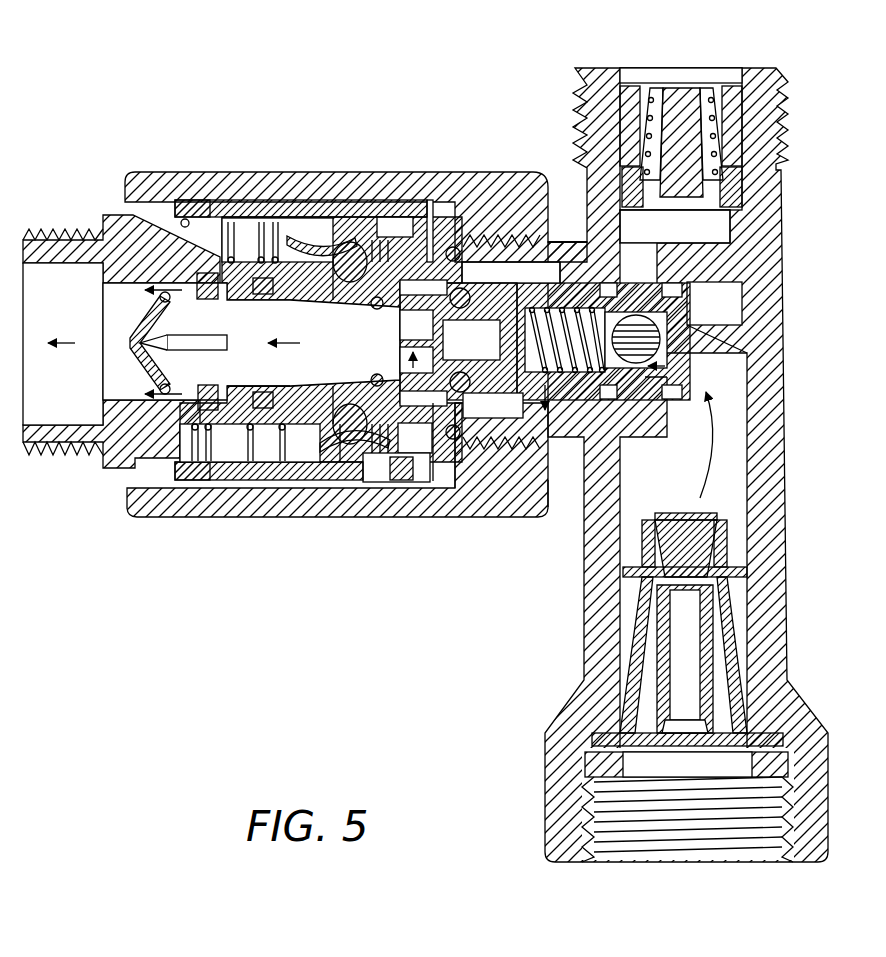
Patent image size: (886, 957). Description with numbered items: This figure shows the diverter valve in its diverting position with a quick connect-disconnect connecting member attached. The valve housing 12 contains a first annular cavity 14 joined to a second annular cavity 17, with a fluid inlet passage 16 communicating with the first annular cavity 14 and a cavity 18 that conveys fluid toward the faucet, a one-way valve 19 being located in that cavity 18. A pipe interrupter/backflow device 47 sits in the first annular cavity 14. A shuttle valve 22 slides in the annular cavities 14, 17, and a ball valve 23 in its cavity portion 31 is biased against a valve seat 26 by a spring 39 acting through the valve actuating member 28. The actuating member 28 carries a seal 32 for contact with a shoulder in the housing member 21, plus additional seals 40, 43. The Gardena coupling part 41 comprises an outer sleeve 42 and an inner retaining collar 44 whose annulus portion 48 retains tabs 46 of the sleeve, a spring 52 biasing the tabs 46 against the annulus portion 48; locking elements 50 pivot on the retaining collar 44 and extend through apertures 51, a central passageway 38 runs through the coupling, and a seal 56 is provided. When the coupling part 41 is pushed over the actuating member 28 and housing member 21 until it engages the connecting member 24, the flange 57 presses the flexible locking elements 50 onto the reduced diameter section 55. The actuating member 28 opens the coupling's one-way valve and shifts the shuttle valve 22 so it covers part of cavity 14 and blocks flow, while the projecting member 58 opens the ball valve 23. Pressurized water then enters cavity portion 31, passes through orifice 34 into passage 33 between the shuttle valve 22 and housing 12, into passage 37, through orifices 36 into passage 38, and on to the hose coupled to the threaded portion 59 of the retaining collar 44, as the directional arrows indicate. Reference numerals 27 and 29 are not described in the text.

The valve housing 12 is at (786, 452).
The first annular cavity 14 is at (735, 300).
The fluid inlet passage 16 is at (605, 852).
The second annular cavity 17 is at (535, 235).
The cavity 18 is at (735, 232).
The one-way valve 19 is at (740, 95).
The housing member 21 is at (505, 480).
The shuttle valve 22 is at (565, 262).
The ball valve 23 is at (637, 318).
The connecting member 24 is at (472, 480).
The valve seat 26 is at (690, 372).
The housing 27 is at (318, 174).
The valve actuating member 28 is at (333, 380).
The inlet 29 is at (545, 490).
The cavity portion 31 is at (528, 300).
The seal 32 is at (470, 380).
The passage 33 is at (482, 250).
The orifice 34 is at (556, 395).
The orifices 36 is at (408, 322).
The passage 37 is at (395, 470).
The central passageway 38 is at (275, 333).
The spring 39 is at (493, 405).
The seal 40 is at (256, 340).
The Gardena coupling part 41 is at (200, 202).
The outer sleeve 42 is at (248, 202).
The seal 43 is at (458, 288).
The inner retaining collar 44 is at (110, 215).
The tabs 46 is at (358, 475).
The pipe interrupter/backflow device 47 is at (730, 600).
The annulus portion 48 is at (430, 481).
The locking elements 50 is at (372, 230).
The apertures 51 is at (345, 300).
The spring 52 is at (215, 488).
The reduced diameter section 55 is at (378, 240).
The seal 56 is at (165, 298).
The flange 57 is at (295, 236).
The projecting member 58 is at (735, 345).
The threaded portion 59 is at (38, 235).